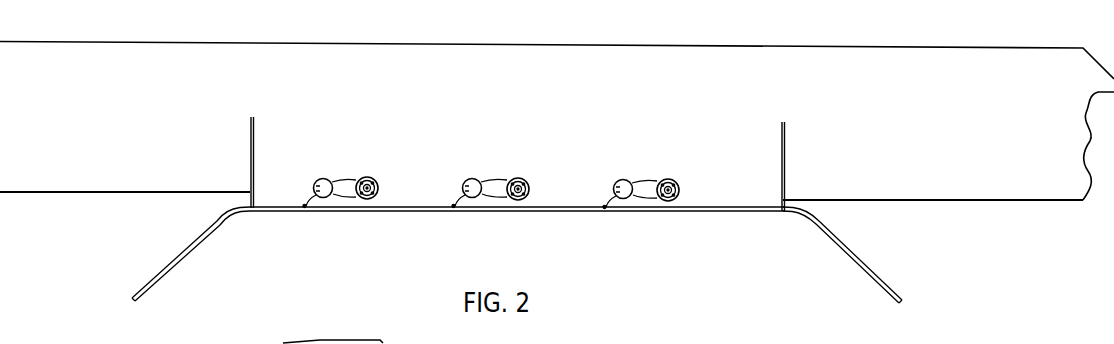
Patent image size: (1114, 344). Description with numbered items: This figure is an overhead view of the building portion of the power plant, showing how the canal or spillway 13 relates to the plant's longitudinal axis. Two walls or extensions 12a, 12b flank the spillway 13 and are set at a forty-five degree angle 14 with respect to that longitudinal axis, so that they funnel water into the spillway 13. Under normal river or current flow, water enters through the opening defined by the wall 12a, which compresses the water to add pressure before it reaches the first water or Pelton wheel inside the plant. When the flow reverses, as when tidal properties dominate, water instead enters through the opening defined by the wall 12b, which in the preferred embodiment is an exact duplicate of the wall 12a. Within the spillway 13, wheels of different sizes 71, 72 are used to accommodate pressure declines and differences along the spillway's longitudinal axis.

The wall or extension 12a is at (140, 282).
The wall or extension 12b is at (897, 285).
The canal or spillway 13 is at (184, 219).
The 45° angle 14 is at (897, 202).
The wheel 71 is at (321, 178).
The wheel 72 is at (372, 177).